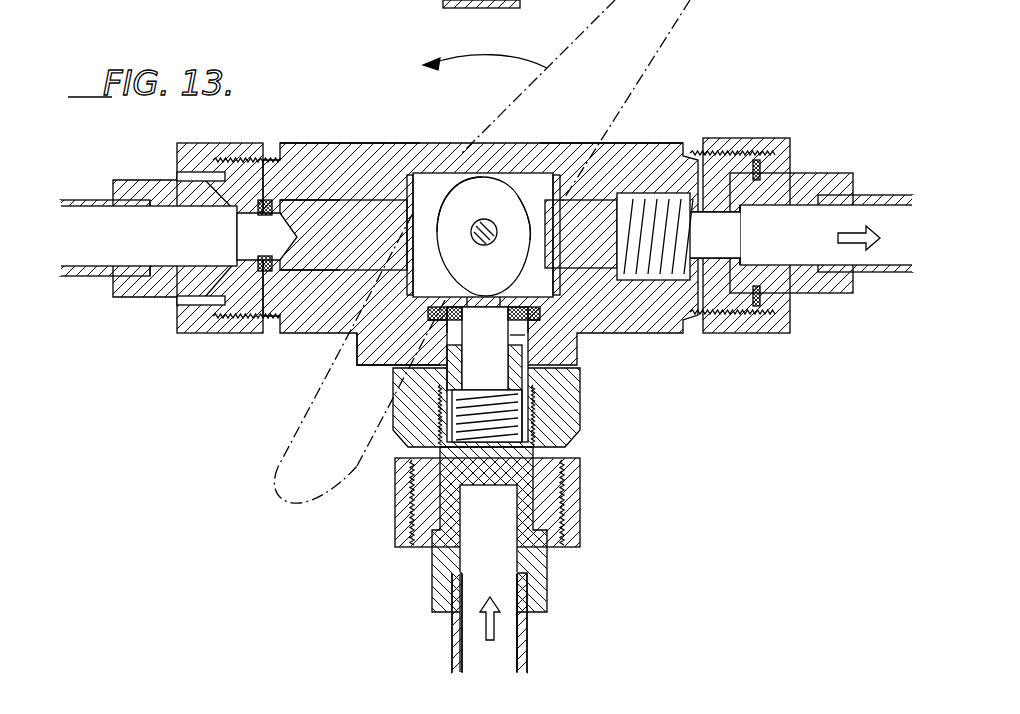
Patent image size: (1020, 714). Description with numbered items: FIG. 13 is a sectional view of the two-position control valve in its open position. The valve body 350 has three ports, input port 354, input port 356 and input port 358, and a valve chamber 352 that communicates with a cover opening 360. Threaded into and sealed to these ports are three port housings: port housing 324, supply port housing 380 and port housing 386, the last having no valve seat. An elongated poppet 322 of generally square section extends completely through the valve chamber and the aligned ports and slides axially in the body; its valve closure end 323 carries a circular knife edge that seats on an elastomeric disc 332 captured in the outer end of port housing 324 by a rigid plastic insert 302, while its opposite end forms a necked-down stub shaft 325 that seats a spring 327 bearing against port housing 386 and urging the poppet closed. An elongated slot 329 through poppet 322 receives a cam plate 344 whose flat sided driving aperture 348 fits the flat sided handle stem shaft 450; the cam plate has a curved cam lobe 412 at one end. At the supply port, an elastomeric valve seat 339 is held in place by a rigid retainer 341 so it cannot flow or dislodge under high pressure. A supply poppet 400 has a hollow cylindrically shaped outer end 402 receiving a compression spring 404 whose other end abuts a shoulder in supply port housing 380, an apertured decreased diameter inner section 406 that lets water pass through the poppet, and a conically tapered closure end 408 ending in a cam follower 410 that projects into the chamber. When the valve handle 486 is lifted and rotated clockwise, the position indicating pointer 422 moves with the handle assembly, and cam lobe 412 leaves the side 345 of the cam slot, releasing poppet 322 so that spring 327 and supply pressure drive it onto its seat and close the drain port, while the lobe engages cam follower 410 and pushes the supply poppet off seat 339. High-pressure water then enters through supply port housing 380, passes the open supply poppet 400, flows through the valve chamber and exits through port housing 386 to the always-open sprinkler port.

The rigid plastic insert 302 is at (293, 238).
The poppet 322 is at (352, 200).
The valve closure end 323 is at (264, 272).
The port housing 324 is at (295, 142).
The necked-down stub shaft 325 is at (622, 282).
The spring 327 is at (668, 212).
The elongated slot 329 is at (406, 244).
The elastomeric disc 332 is at (264, 200).
The elastomeric valve seat 339 is at (428, 314).
The rigid retainer 341 is at (526, 336).
The cam plate 344 is at (499, 176).
The side of cam slot 345 is at (530, 218).
The flat sided driving aperture 348 is at (484, 245).
The valve body 350 is at (399, 140).
The valve chamber 352 is at (381, 176).
The input port 354 is at (600, 142).
The input port 356 is at (360, 142).
The input port 358 is at (396, 351).
The cover opening 360 is at (472, 176).
The supply port housing 380 is at (583, 420).
The port housing 386 is at (655, 138).
The supply poppet 400 is at (524, 398).
The hollow cylindrically shaped outer end 402 is at (524, 412).
The compression spring 404 is at (445, 430).
The decreased diameter inner section 406 is at (522, 370).
The conically tapered closure end 408 is at (548, 345).
The cam follower 410 is at (495, 284).
The curved cam lobe 412 is at (458, 306).
The position indicating pointer 422 is at (552, 314).
The flat sided handle stem shaft 450 is at (484, 236).
The valve handle 486 is at (305, 407).